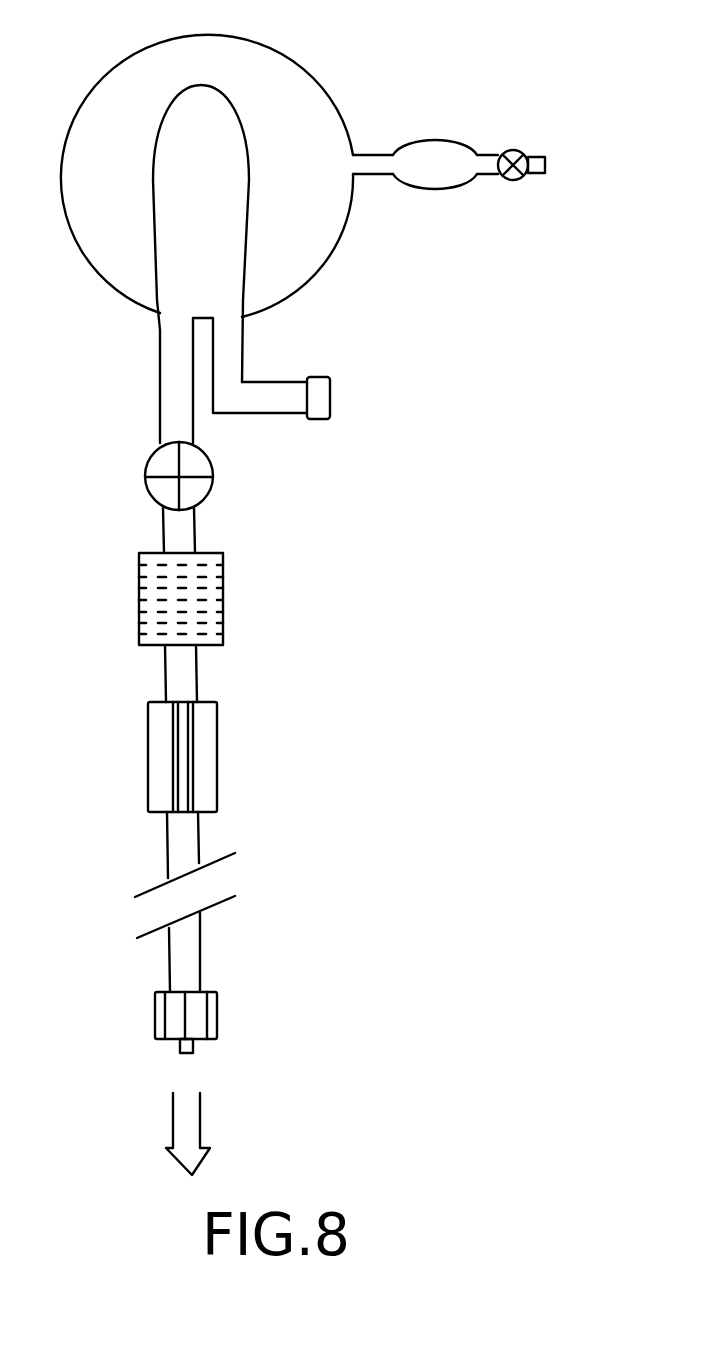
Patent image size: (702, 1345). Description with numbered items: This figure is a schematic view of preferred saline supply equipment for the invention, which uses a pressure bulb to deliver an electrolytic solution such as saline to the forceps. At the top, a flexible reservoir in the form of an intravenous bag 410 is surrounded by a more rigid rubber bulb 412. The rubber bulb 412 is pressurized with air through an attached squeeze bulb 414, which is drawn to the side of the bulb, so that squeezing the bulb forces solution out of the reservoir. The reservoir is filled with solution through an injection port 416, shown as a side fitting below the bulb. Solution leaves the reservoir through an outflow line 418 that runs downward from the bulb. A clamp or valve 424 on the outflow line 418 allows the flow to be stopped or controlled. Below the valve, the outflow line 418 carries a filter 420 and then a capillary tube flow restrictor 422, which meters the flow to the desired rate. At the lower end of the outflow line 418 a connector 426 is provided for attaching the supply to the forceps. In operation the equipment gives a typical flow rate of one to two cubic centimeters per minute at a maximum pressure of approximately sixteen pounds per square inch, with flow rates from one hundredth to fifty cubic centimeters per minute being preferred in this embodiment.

The intravenous (IV) bag 410 is at (247, 173).
The rubber bulb 412 is at (334, 107).
The squeeze bulb 414 is at (472, 183).
The injection port 416 is at (333, 400).
The outflow line 418 is at (197, 665).
The filter 420 is at (225, 615).
The capillary tube flow restrictor 422 is at (218, 777).
The clamp or valve 424 is at (215, 482).
The connector 426 is at (218, 1017).